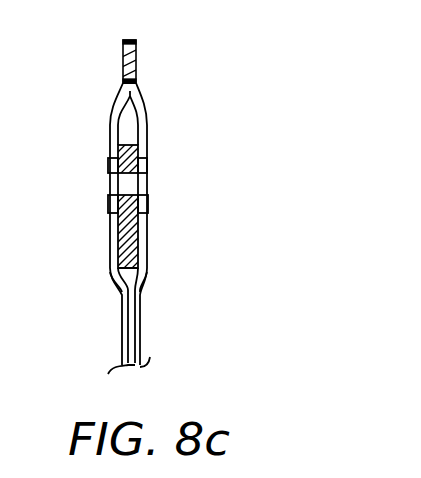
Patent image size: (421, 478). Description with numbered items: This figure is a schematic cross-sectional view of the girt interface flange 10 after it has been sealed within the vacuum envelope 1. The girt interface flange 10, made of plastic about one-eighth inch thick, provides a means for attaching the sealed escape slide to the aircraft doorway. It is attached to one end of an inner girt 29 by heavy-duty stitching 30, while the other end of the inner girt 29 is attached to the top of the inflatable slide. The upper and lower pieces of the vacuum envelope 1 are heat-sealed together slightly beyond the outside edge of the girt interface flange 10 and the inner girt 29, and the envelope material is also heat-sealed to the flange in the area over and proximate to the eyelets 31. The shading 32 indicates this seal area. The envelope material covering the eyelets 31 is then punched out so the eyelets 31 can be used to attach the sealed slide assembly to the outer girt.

The vacuum envelope 1 is at (142, 111).
The shading 32 is at (125, 53).
The eyelets 31 is at (123, 183).
The girt interface flange 10 is at (148, 203).
The heavy-duty stitching 30 is at (108, 233).
The inner girt 29 is at (140, 278).